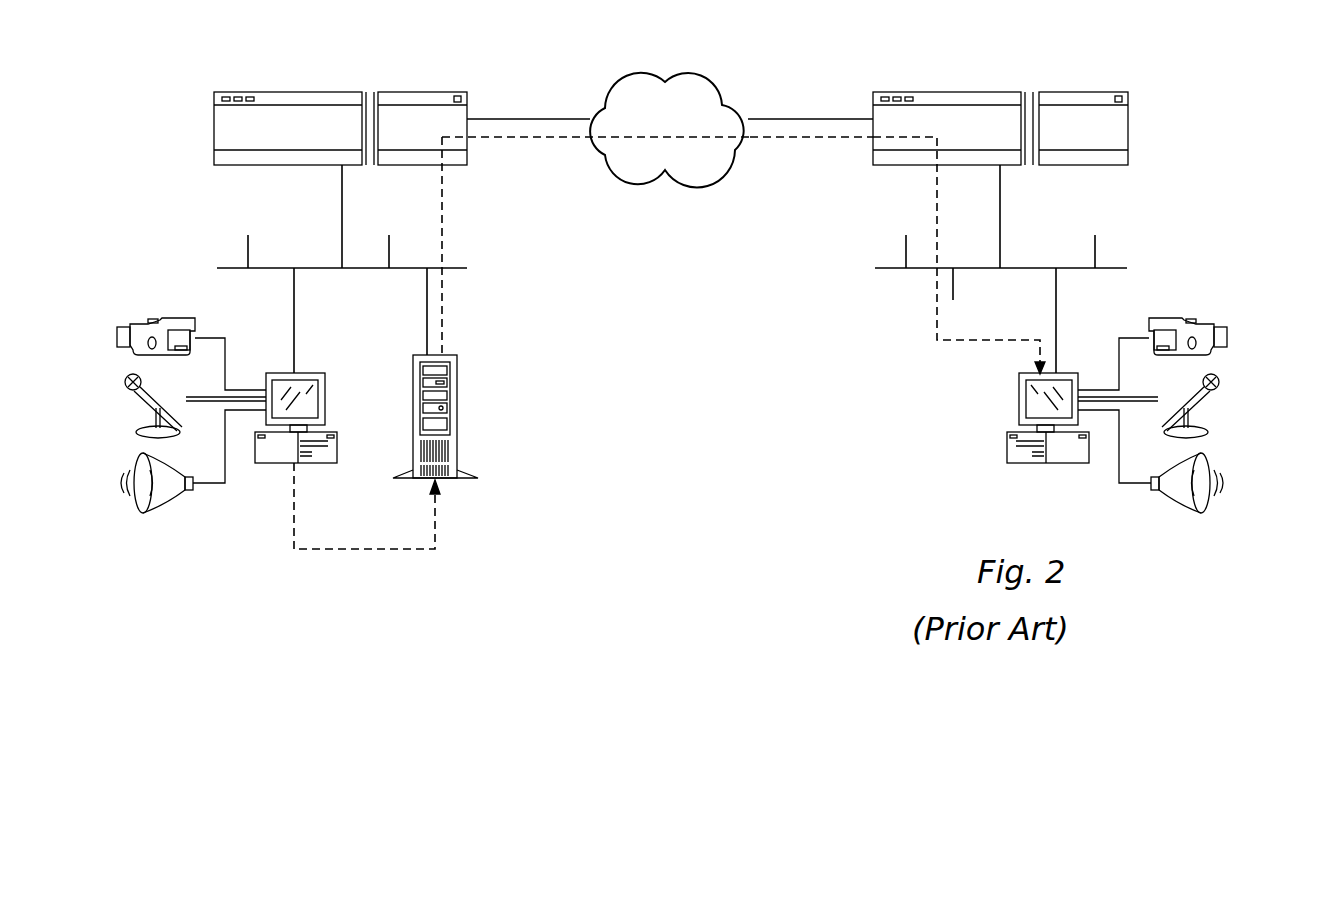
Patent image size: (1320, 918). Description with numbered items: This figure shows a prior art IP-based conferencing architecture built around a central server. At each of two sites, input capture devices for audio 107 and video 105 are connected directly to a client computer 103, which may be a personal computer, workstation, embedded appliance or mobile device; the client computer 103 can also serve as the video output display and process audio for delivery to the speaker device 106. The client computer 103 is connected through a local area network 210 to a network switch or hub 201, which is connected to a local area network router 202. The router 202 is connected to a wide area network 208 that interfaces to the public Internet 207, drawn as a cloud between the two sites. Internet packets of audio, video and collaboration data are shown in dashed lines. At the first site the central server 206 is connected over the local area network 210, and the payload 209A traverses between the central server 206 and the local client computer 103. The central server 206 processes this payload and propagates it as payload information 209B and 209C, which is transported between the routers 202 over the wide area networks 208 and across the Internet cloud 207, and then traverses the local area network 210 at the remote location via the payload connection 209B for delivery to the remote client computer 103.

The network switch or hub 201 is at (288, 92).
The local area network router 202 is at (427, 92).
The public Internet 207 is at (647, 74).
The wide area network 208 is at (541, 117).
The payload 209A is at (404, 552).
The payload connection 209B is at (527, 140).
The payload information 209C is at (800, 140).
The local area network 210 is at (307, 267).
The client computer 103 is at (326, 398).
The video input capture device 105 is at (117, 333).
The speaker device 106 is at (136, 470).
The audio input capture device 107 is at (150, 398).
The central server 206 is at (458, 408).